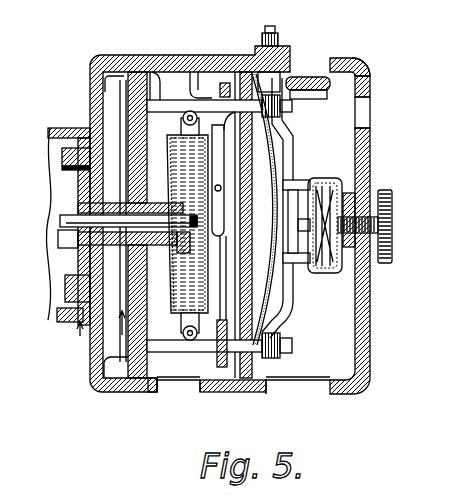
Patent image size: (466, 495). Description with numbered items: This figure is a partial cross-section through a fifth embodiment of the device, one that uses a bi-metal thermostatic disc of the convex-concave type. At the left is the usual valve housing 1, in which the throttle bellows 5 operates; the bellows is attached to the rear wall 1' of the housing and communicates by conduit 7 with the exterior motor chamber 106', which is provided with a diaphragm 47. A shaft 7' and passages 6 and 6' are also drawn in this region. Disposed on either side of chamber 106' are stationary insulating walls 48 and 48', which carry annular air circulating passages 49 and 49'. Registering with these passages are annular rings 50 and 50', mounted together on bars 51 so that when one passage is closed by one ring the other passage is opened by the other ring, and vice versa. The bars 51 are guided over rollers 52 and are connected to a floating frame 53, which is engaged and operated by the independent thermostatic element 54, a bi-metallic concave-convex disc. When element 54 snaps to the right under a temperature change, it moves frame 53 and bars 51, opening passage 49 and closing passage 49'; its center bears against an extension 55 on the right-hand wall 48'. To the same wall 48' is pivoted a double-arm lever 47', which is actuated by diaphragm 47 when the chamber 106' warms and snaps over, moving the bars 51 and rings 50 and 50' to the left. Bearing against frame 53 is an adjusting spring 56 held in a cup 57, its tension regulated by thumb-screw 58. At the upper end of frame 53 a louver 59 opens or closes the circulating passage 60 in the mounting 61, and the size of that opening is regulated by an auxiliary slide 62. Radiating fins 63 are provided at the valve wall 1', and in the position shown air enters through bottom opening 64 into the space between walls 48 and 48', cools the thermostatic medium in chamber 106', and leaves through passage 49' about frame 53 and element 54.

The valve housing 1 is at (53, 226).
The rear wall of the valve housing 1' is at (54, 171).
The throttle bellows 5 is at (65, 244).
The passage 6 is at (121, 221).
The passage 6' is at (73, 307).
The conduit 7 is at (103, 244).
The shaft 7' is at (112, 222).
The diaphragm 47 is at (330, 264).
The double-arm lever 47' is at (361, 131).
The stationary insulating wall 48 is at (156, 219).
The stationary insulating wall 48' is at (351, 144).
The annular air circulating passage 49 is at (130, 403).
The annular air circulating passage 49' is at (239, 402).
The annular ring 50 is at (147, 60).
The annular ring 50' is at (211, 184).
The bars 51 is at (157, 100).
The rollers 52 is at (194, 112).
The floating frame 53 is at (276, 331).
The thermostatic element 54 is at (258, 281).
The extension 55 is at (332, 178).
The adjusting spring 56 is at (318, 183).
The cup 57 is at (340, 186).
The thumb-screw 58 is at (393, 210).
The louver 59 is at (363, 68).
The circulating passage 60 is at (313, 65).
The mounting 61 is at (351, 62).
The auxiliary slide 62 is at (287, 45).
The radiating fins 63 is at (113, 360).
The bottom opening 64 is at (183, 390).
The exterior motor chamber 106' is at (179, 234).